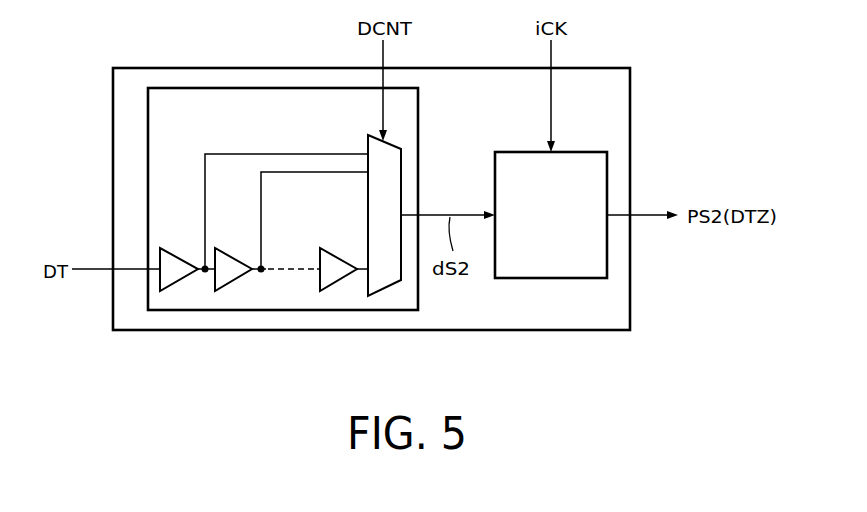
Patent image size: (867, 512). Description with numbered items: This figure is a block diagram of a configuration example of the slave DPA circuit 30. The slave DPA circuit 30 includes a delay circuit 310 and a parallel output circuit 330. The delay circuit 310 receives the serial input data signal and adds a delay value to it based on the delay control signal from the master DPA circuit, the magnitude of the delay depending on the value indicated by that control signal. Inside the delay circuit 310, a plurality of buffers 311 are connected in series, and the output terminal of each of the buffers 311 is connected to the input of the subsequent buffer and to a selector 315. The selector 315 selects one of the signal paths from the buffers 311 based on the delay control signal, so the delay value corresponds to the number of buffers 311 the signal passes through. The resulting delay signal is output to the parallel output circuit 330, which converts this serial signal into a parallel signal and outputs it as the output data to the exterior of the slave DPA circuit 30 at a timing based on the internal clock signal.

The slave DPA circuit 30 is at (292, 68).
The delay circuit 310 is at (203, 87).
The buffers 311 is at (336, 335).
The selector 315 is at (386, 293).
The parallel output circuit 330 is at (553, 279).